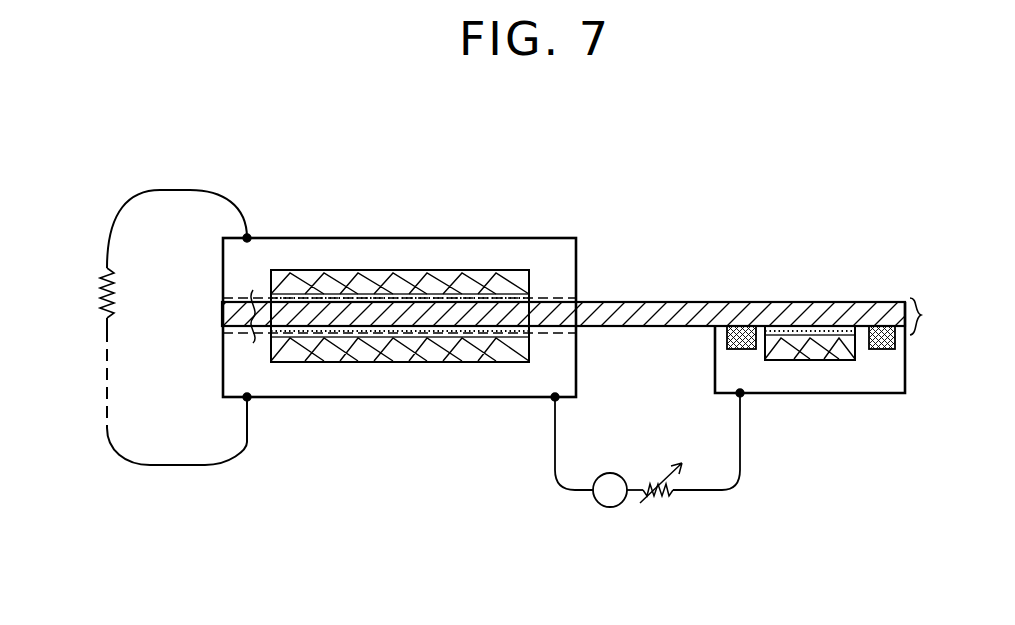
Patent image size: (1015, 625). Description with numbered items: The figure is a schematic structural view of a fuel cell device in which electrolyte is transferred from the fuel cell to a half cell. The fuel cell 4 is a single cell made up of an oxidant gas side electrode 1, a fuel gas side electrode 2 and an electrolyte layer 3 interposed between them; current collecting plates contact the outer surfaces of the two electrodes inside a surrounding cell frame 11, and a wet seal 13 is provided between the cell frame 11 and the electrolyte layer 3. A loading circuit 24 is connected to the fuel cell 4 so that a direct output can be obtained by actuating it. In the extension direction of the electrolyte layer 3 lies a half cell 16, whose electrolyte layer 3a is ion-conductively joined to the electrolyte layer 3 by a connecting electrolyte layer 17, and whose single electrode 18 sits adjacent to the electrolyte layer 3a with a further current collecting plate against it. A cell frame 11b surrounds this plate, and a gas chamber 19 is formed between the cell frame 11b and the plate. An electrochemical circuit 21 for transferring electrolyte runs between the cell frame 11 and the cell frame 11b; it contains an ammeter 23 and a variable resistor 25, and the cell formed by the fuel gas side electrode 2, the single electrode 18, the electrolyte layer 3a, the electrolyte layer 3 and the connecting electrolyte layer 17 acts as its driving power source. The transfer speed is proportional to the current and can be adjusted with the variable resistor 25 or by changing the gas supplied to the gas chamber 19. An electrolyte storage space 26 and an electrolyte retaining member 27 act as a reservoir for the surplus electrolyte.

The oxidant gas side electrode 1 is at (355, 292).
The fuel gas side electrode 2 is at (342, 338).
The electrolyte layer 3 is at (295, 323).
The electrolyte layer 3a is at (810, 308).
The fuel cell 4 is at (227, 322).
The cell frame 11 is at (437, 251).
The cell frame 11b is at (898, 370).
The wet seal 13 is at (533, 336).
The half cell 16 is at (922, 316).
The connecting electrolyte layer 17 is at (640, 306).
The single electrode 18 is at (847, 324).
The gas chamber 19 is at (828, 350).
The electrochemical circuit 21 is at (742, 468).
The ammeter 23 is at (606, 508).
The loading circuit 24 is at (170, 466).
The variable resistor 25 is at (664, 498).
The electrolyte storage space 26 is at (887, 349).
The electrolyte retaining member 27 is at (727, 345).